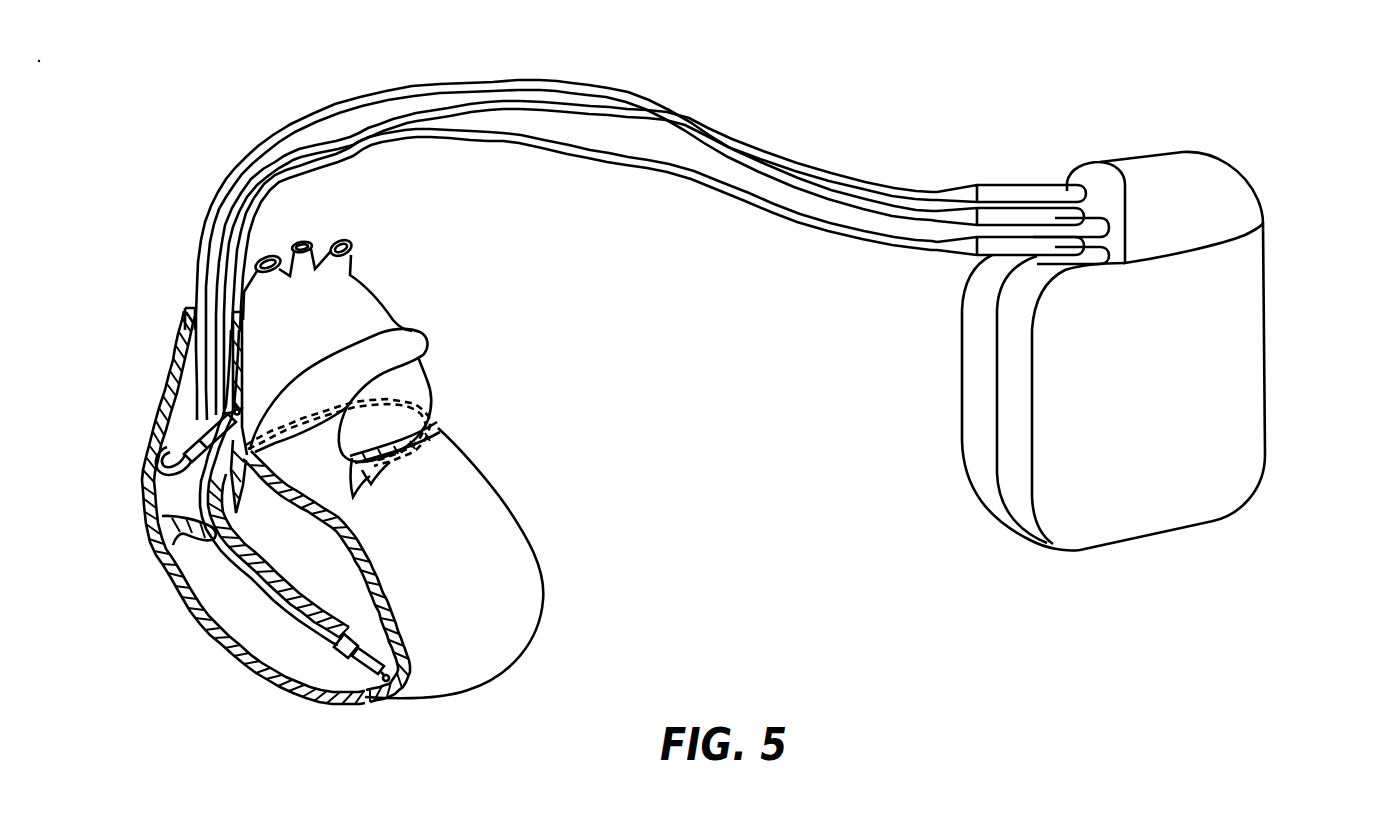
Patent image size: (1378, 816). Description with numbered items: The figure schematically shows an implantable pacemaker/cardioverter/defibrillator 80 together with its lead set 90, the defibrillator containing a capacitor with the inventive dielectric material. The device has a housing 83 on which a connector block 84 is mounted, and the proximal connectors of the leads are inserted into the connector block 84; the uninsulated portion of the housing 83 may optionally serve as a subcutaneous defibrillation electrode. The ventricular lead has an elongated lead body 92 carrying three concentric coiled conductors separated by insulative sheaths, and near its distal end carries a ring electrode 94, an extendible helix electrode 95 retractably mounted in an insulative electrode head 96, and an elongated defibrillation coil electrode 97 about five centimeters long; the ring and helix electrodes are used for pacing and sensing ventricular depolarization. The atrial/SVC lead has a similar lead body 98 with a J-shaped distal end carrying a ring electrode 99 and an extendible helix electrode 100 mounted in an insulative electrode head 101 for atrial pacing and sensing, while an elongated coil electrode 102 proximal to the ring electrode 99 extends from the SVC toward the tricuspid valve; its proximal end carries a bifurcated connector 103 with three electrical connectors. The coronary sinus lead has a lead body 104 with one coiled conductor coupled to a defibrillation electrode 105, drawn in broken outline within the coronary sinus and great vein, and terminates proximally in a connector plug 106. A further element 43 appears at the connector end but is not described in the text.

The implantable pacemaker/cardioverter/defibrillator 80 is at (1137, 341).
The housing 83 is at (1135, 508).
The connector block 84 is at (1220, 177).
The lead set 90 is at (569, 222).
The lead body 92 is at (773, 212).
The lead body 98 is at (793, 190).
The lead body 104 is at (913, 193).
The connector plug 106 is at (983, 190).
The bifurcated connector 103 is at (1005, 218).
The lead connector 43 is at (967, 250).
The elongated coil electrode 102 is at (198, 340).
The insulative electrode head 101 is at (200, 412).
The ring electrode 99 is at (177, 450).
The extendible helix electrode 100 is at (239, 417).
The defibrillation electrode 105 is at (417, 408).
The elongated defibrillation coil electrode 97 is at (272, 593).
The ring electrode 94 is at (335, 648).
The insulative electrode head 96 is at (366, 662).
The extendible helix electrode 95 is at (388, 682).